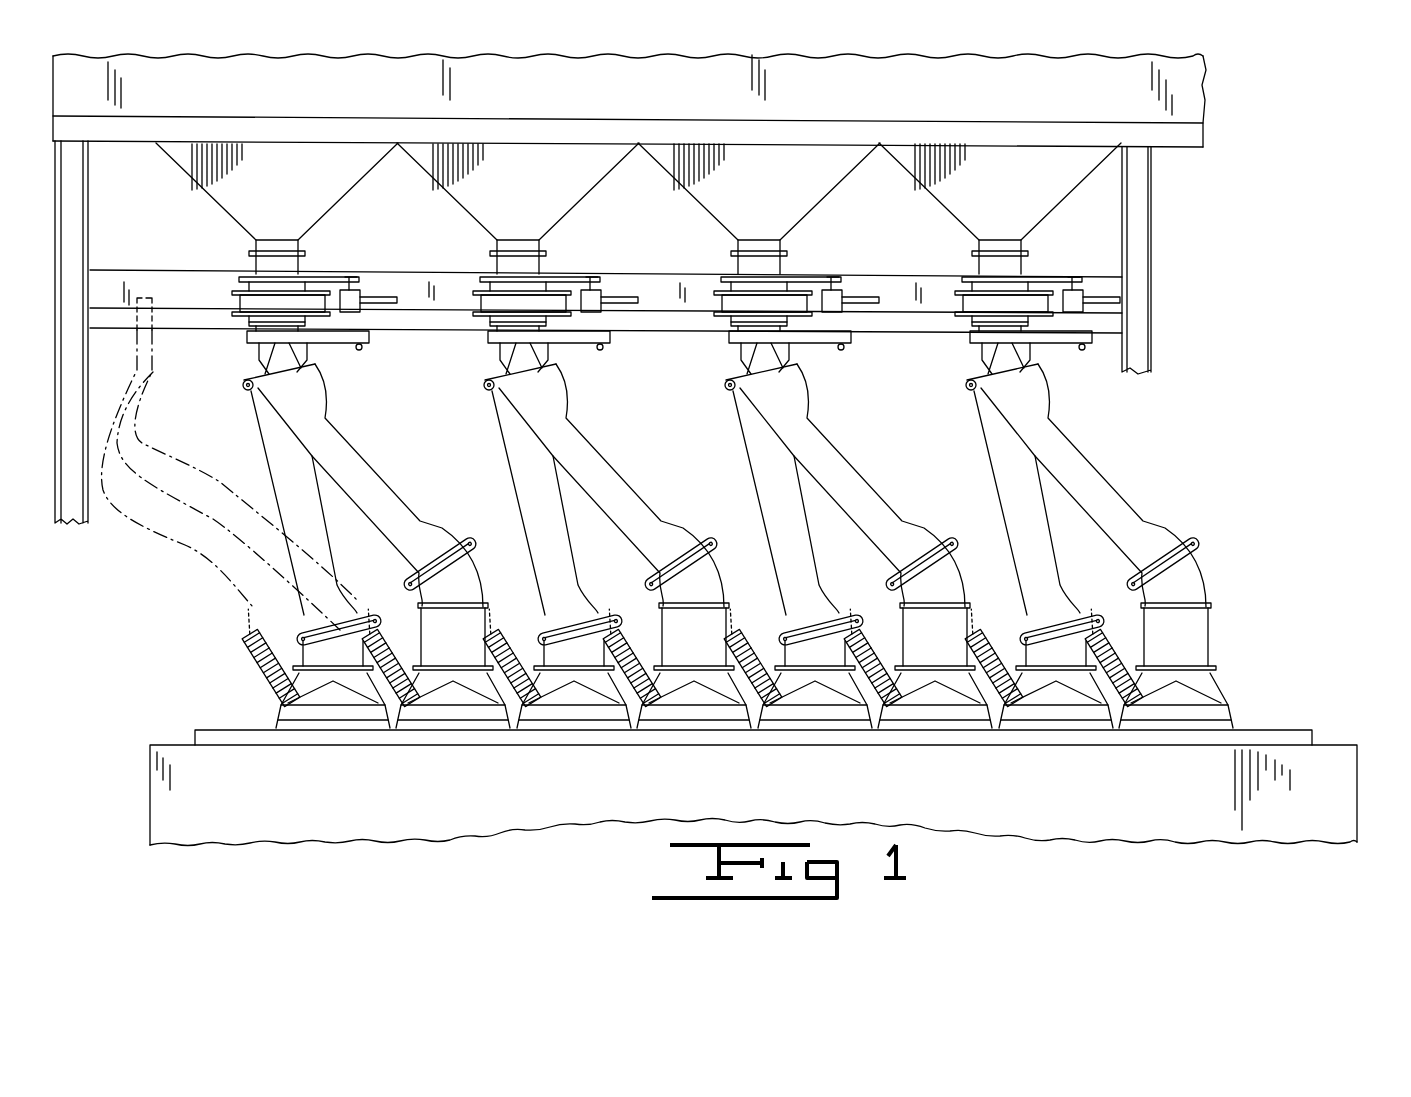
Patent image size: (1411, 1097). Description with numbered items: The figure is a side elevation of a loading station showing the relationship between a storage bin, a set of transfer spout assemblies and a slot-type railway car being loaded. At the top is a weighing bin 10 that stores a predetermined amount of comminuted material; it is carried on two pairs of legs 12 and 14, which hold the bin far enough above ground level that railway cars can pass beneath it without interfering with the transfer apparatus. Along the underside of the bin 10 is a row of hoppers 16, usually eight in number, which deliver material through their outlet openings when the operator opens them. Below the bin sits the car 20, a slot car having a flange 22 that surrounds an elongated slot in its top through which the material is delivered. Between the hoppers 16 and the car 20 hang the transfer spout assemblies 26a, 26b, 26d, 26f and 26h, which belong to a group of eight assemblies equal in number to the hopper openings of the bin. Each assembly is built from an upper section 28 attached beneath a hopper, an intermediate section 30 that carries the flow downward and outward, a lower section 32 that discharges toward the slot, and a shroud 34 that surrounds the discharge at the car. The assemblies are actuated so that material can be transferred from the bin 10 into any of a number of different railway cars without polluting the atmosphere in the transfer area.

The weighing bin 10 is at (1238, 70).
The legs 12 is at (74, 362).
The legs 14 is at (1141, 267).
The hoppers 16 is at (226, 202).
The car 20 is at (1372, 828).
The flange 22 is at (1316, 732).
The transfer spout assembly 26a is at (282, 578).
The transfer spout assembly 26b is at (412, 492).
The transfer spout assembly 26d is at (652, 495).
The transfer spout assembly 26f is at (890, 476).
The transfer spout assembly 26h is at (1180, 497).
The upper section 28 is at (298, 284).
The intermediate section 30 is at (286, 462).
The lower section 32 is at (470, 626).
The shroud 34 is at (352, 720).